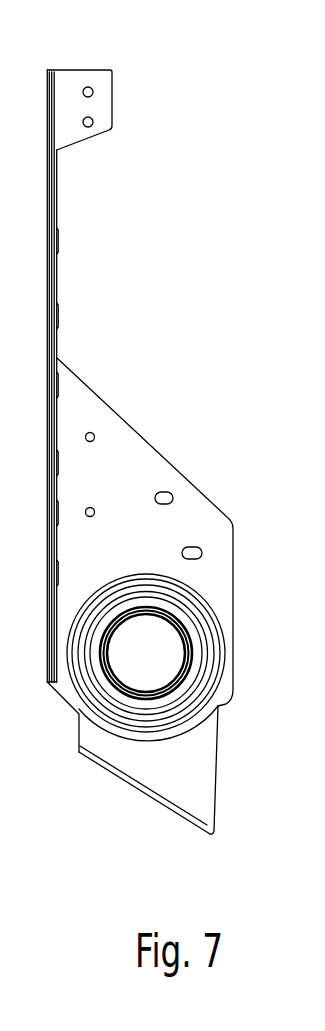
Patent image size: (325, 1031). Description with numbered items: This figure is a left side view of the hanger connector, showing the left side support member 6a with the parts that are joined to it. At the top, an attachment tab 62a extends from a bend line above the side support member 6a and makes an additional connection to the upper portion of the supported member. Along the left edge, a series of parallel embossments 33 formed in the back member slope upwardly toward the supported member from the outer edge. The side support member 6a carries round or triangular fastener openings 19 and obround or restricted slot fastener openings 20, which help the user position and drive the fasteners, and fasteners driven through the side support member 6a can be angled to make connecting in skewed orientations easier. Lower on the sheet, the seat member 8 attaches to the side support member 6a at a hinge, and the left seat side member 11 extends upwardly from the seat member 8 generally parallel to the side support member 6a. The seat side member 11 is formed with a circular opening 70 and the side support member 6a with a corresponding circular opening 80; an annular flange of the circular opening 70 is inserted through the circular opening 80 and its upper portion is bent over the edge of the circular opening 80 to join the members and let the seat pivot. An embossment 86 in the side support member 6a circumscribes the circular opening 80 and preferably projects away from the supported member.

The attachment tab 62a is at (88, 70).
The embossments 33 is at (57, 201).
The fastener openings 19 is at (94, 441).
The side support member 6a is at (147, 456).
The slot fastener openings 20 is at (164, 492).
The embossment 86 is at (203, 617).
The circular opening 70 is at (165, 648).
The circular opening 80 is at (123, 660).
The seat side member 11 is at (196, 777).
The seat member 8 is at (195, 825).